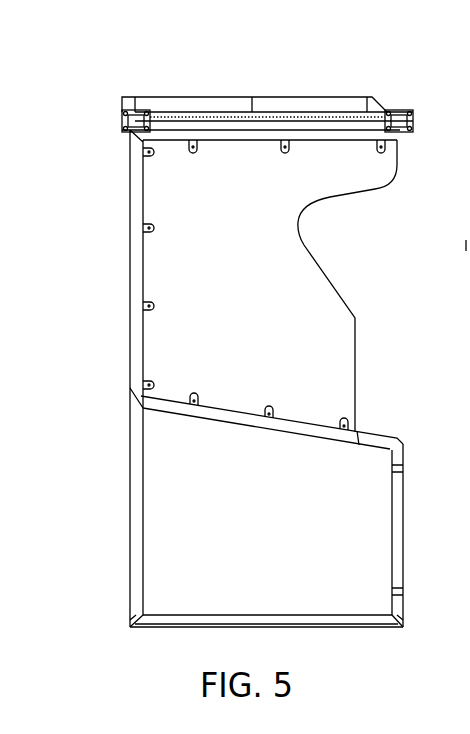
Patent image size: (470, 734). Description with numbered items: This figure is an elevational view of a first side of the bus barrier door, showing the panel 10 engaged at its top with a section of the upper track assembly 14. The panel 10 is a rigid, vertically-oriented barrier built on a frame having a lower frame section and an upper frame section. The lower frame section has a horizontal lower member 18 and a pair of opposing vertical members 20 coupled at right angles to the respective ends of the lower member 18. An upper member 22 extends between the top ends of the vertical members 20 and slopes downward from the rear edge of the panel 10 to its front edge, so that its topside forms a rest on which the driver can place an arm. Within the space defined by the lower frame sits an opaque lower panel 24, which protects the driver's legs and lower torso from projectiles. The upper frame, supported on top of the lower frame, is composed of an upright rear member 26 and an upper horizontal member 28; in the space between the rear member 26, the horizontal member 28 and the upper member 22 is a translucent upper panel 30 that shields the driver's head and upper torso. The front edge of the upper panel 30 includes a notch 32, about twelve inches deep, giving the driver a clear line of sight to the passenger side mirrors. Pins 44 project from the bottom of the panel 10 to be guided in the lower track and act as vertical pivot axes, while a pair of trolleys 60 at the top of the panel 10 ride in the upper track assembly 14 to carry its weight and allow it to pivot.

The panel 10 is at (81, 288).
The upper track assembly 14 is at (263, 97).
The horizontal lower member 18 is at (337, 623).
The vertical members 20 is at (129, 511).
The upper member 22 is at (377, 440).
The lower panel 24 is at (282, 535).
The rear member 26 is at (130, 220).
The upper horizontal member 28 is at (407, 136).
The upper panel 30 is at (254, 276).
The notch 32 is at (377, 255).
The set of pins 44 is at (138, 625).
The trolleys 60 is at (393, 110).